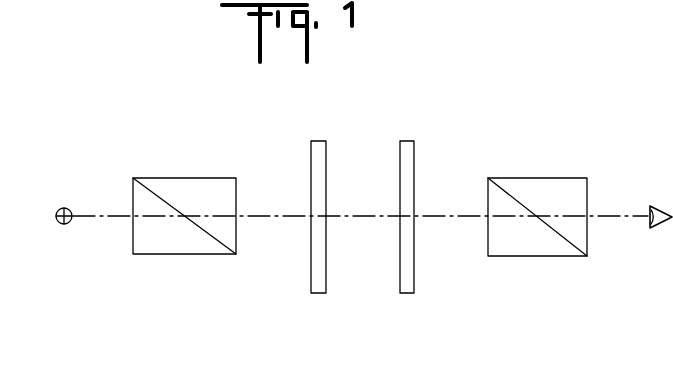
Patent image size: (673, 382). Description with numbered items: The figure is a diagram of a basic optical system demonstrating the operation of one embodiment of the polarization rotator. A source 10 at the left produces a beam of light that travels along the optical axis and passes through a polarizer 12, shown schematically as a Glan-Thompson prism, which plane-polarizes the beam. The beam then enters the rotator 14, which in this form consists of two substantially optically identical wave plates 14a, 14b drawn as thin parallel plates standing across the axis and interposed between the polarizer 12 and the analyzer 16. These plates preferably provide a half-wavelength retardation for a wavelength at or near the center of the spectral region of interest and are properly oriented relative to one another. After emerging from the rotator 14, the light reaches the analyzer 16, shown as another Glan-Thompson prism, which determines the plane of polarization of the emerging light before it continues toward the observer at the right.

The source 10 is at (63, 207).
The polarizer 12 is at (191, 177).
The rotator 14 is at (366, 195).
The wave plate 14a is at (311, 260).
The wave plate 14b is at (414, 260).
The analyzer 16 is at (545, 178).